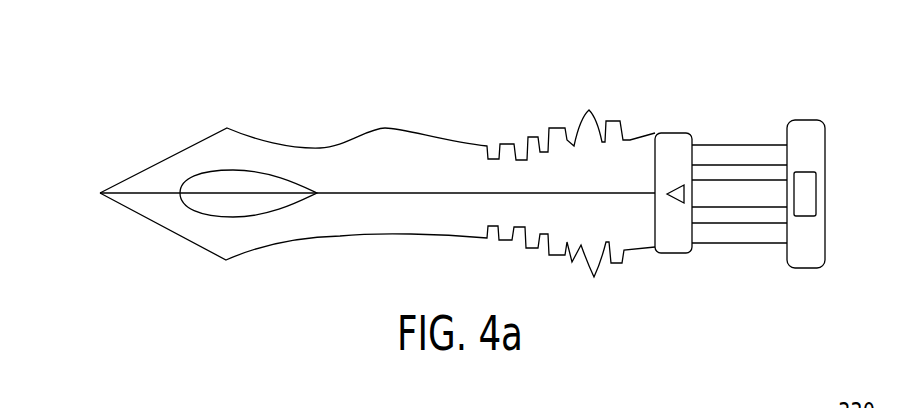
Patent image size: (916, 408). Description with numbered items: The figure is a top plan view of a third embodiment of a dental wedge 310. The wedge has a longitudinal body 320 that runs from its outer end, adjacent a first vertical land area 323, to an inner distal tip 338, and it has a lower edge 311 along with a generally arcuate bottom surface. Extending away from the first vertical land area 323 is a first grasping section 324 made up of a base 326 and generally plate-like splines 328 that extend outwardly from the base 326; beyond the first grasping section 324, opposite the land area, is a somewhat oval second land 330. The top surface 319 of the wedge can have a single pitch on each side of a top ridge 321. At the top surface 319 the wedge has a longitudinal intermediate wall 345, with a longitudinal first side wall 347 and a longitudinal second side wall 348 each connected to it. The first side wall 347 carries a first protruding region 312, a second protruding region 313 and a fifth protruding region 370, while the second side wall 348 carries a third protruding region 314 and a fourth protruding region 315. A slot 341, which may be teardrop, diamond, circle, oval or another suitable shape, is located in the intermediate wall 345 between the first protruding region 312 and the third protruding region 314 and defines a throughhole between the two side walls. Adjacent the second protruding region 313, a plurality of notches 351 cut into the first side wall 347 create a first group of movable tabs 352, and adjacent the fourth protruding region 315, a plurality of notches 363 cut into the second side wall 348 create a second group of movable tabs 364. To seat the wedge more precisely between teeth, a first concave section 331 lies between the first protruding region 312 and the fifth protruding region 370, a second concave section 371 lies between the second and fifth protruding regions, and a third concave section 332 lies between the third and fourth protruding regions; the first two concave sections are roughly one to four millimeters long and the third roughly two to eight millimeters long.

The dental wedge 310 is at (322, 94).
The lower edge 311 is at (142, 222).
The first protruding region 312 is at (221, 120).
The second protruding region 313 is at (572, 73).
The third protruding region 314 is at (220, 263).
The fourth protruding region 315 is at (592, 292).
The top surface 319 is at (428, 167).
The longitudinal body 320 is at (273, 230).
The top ridge 321 is at (372, 181).
The first vertical land area 323 is at (672, 150).
The first grasping section 324 is at (724, 106).
The base 326 is at (735, 212).
The splines 328 is at (765, 228).
The second land 330 is at (803, 245).
The first concave section 331 is at (315, 140).
The third concave section 332 is at (383, 233).
The inner distal tip 338 is at (103, 207).
The slot 341 is at (223, 195).
The longitudinal intermediate wall 345 is at (342, 192).
The longitudinal first side wall 347 is at (253, 159).
The longitudinal second side wall 348 is at (323, 217).
The notches 351 is at (625, 127).
The first group of movable tabs 352 is at (605, 138).
The notches 363 is at (614, 268).
The second group of movable tabs 364 is at (600, 253).
The fifth protruding region 370 is at (410, 124).
The second concave section 371 is at (470, 140).